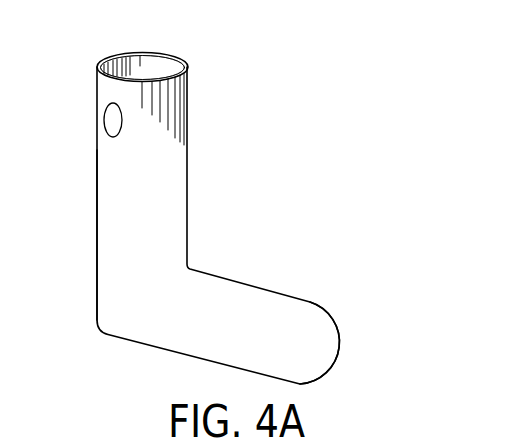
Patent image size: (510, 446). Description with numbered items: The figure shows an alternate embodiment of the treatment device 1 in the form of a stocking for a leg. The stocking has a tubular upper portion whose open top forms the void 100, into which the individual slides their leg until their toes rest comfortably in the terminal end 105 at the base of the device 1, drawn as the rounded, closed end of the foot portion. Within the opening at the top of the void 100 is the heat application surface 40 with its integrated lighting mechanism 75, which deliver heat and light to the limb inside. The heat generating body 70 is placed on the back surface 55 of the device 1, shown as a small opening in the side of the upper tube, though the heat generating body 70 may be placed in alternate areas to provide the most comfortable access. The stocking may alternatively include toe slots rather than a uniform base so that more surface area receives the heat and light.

The treatment device 1 is at (310, 157).
The void 100 is at (96, 55).
The integrated lighting mechanism 75 is at (157, 72).
The heat application surface 40 is at (143, 68).
The heat generating body 70 is at (112, 120).
The back surface 55 is at (116, 281).
The terminal end 105 is at (351, 358).